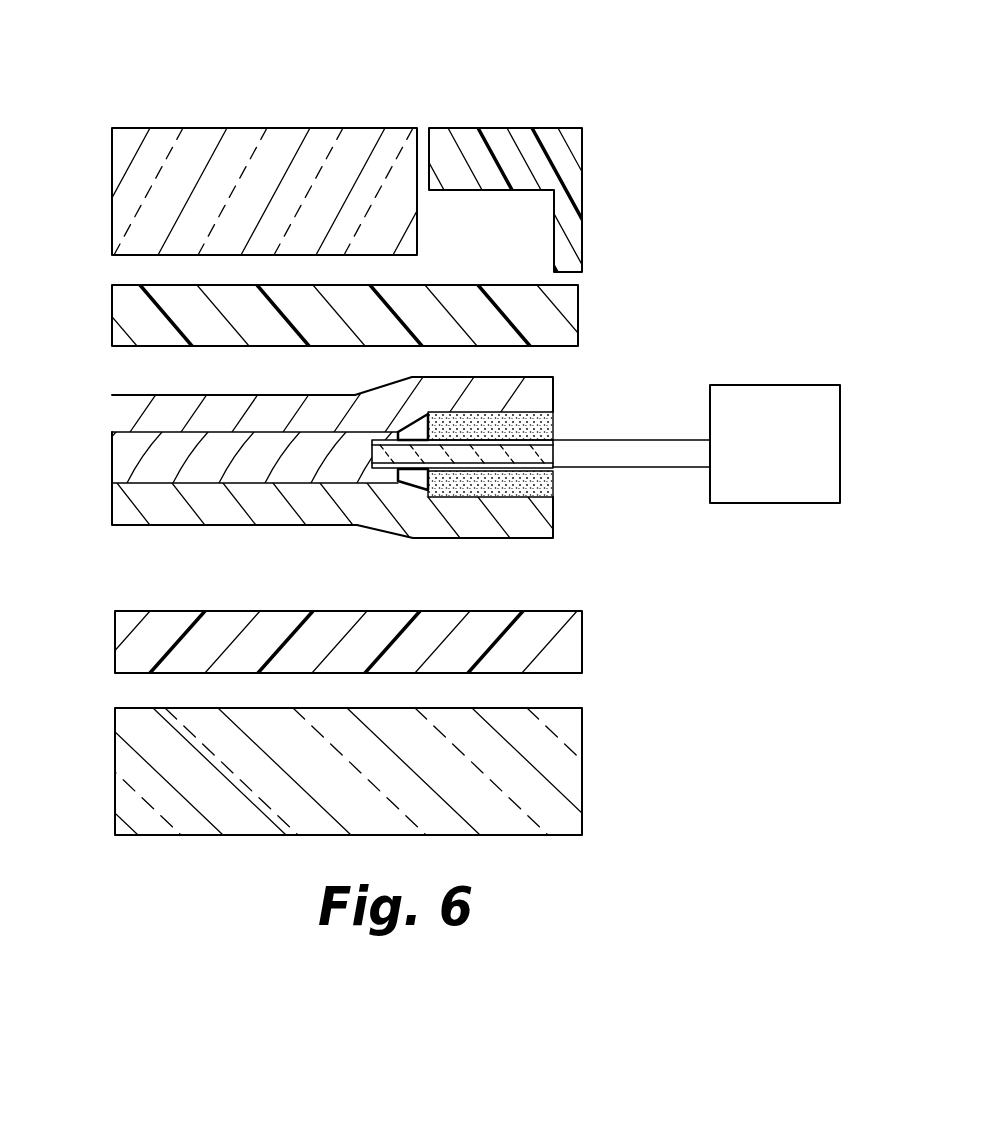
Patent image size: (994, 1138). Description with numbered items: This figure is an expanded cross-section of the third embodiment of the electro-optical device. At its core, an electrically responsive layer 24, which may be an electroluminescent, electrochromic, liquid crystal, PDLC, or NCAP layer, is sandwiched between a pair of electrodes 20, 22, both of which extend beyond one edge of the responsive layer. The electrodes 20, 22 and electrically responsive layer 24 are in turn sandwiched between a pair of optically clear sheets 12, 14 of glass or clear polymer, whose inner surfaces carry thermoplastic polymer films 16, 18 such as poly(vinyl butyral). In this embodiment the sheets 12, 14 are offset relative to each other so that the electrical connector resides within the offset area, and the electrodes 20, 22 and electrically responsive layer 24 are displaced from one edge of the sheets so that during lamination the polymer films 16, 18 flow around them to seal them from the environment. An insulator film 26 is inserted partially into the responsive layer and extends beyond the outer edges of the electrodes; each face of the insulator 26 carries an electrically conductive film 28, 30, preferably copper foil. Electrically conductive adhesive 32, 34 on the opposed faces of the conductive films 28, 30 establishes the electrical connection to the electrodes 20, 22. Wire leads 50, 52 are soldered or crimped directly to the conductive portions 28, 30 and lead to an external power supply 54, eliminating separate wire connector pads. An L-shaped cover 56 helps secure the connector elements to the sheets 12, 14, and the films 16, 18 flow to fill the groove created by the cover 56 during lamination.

The optically clear sheet 12 is at (286, 134).
The optically clear sheet 14 is at (572, 750).
The polymer film 16 is at (123, 295).
The polymer film 18 is at (572, 632).
The electrode 20 is at (123, 410).
The electrode 22 is at (123, 508).
The electrically responsive layer 24 is at (122, 448).
The insulator film 26 is at (560, 453).
The electrically conductive film 28 is at (410, 432).
The electrically conductive film 30 is at (417, 478).
The electrically conductive adhesive 32 is at (557, 422).
The electrically conductive adhesive 34 is at (558, 488).
The wire lead 50 is at (660, 440).
The wire lead 52 is at (672, 470).
The power supply 54 is at (800, 400).
The L-shaped cover 56 is at (520, 132).